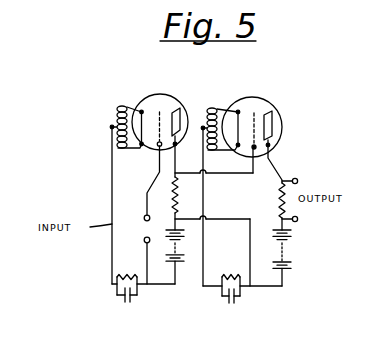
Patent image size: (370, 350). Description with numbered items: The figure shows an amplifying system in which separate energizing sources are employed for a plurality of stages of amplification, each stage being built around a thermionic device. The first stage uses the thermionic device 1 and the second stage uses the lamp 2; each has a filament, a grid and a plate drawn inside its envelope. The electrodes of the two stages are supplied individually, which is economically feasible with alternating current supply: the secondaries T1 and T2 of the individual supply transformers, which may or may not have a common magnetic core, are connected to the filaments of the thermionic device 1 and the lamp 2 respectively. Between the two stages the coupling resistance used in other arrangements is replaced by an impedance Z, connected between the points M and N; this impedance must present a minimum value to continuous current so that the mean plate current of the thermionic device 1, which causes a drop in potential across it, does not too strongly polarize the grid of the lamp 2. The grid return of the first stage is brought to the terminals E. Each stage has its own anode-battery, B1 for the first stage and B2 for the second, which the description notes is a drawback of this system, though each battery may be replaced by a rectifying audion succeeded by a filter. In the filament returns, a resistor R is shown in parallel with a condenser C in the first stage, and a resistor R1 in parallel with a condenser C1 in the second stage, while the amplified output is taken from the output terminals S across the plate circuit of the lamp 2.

The thermionic device 1 is at (160, 114).
The lamp 2 is at (252, 119).
The secondary of individual supply transformer T1 is at (125, 116).
The secondary of individual supply transformer T2 is at (219, 118).
The grid bias terminals E is at (143, 215).
The junction point M is at (214, 164).
The impedance Z is at (183, 195).
The junction point N is at (212, 249).
The anode-battery B1 is at (184, 257).
The anode-battery B2 is at (292, 252).
The resistor R is at (127, 275).
The resistor R1 is at (232, 276).
The condenser C is at (127, 305).
The condenser C1 is at (230, 306).
The output terminals S is at (295, 197).